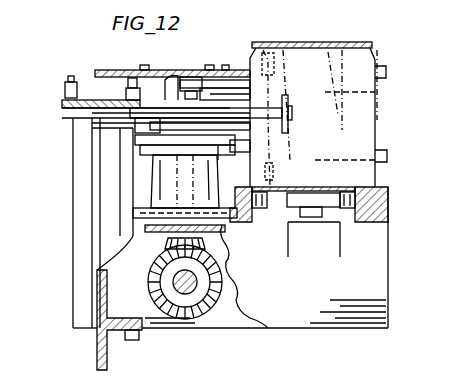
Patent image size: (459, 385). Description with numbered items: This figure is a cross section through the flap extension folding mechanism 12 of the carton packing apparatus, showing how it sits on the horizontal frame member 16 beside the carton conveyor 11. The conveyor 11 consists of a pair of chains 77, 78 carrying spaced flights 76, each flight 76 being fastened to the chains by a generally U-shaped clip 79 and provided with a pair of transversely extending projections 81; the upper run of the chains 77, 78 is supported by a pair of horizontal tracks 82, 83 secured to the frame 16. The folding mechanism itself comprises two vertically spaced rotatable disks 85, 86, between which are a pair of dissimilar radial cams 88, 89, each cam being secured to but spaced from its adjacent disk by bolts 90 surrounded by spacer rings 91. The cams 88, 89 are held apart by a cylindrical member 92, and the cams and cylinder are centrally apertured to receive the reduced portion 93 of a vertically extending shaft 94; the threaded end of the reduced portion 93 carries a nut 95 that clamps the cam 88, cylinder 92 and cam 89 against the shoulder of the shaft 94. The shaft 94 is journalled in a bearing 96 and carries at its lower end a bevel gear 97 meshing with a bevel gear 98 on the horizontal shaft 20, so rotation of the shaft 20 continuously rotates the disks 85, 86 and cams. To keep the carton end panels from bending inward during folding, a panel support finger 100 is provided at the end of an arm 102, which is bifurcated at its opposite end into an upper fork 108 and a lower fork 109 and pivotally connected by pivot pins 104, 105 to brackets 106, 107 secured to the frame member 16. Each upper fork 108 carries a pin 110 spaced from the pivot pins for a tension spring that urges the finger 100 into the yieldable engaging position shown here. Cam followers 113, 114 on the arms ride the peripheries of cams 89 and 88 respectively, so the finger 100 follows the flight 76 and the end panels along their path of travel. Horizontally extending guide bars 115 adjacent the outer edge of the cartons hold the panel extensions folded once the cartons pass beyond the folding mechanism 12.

The carton conveyor 11 is at (384, 133).
The flap extension folding mechanism 12 is at (80, 63).
The frame member 16 is at (98, 357).
The horizontal shaft 20 is at (197, 285).
The flight 76 is at (392, 64).
The chain 77 is at (277, 212).
The chain 78 is at (343, 217).
The U-shaped clip 79 is at (290, 188).
The transversely extending projection 81 is at (386, 78).
The track 82 is at (243, 222).
The track 83 is at (378, 222).
The rotatable disk 85 is at (107, 70).
The rotatable disk 86 is at (137, 148).
The radial cam 88 is at (243, 97).
The radial cam 89 is at (140, 132).
The bolt 90 is at (148, 70).
The spacer ring 91 is at (165, 72).
The cylindrical member 92 is at (240, 128).
The reduced portion 93 is at (220, 88).
The vertically extending shaft 94 is at (133, 218).
The nut 95 is at (192, 80).
The bearing 96 is at (150, 197).
The bevel gear 97 is at (140, 245).
The bevel gear 98 is at (150, 293).
The panel support finger 100 is at (286, 102).
The arm 102 is at (266, 115).
The pivot pin 104 is at (110, 133).
The pivot pin 105 is at (95, 124).
The bracket 106 is at (102, 130).
The bracket 107 is at (72, 120).
The upper fork 108 is at (87, 100).
The lower fork 109 is at (122, 140).
The pin 110 is at (67, 80).
The cam follower 113 is at (240, 146).
The cam follower 114 is at (127, 92).
The guide bar 115 is at (278, 46).